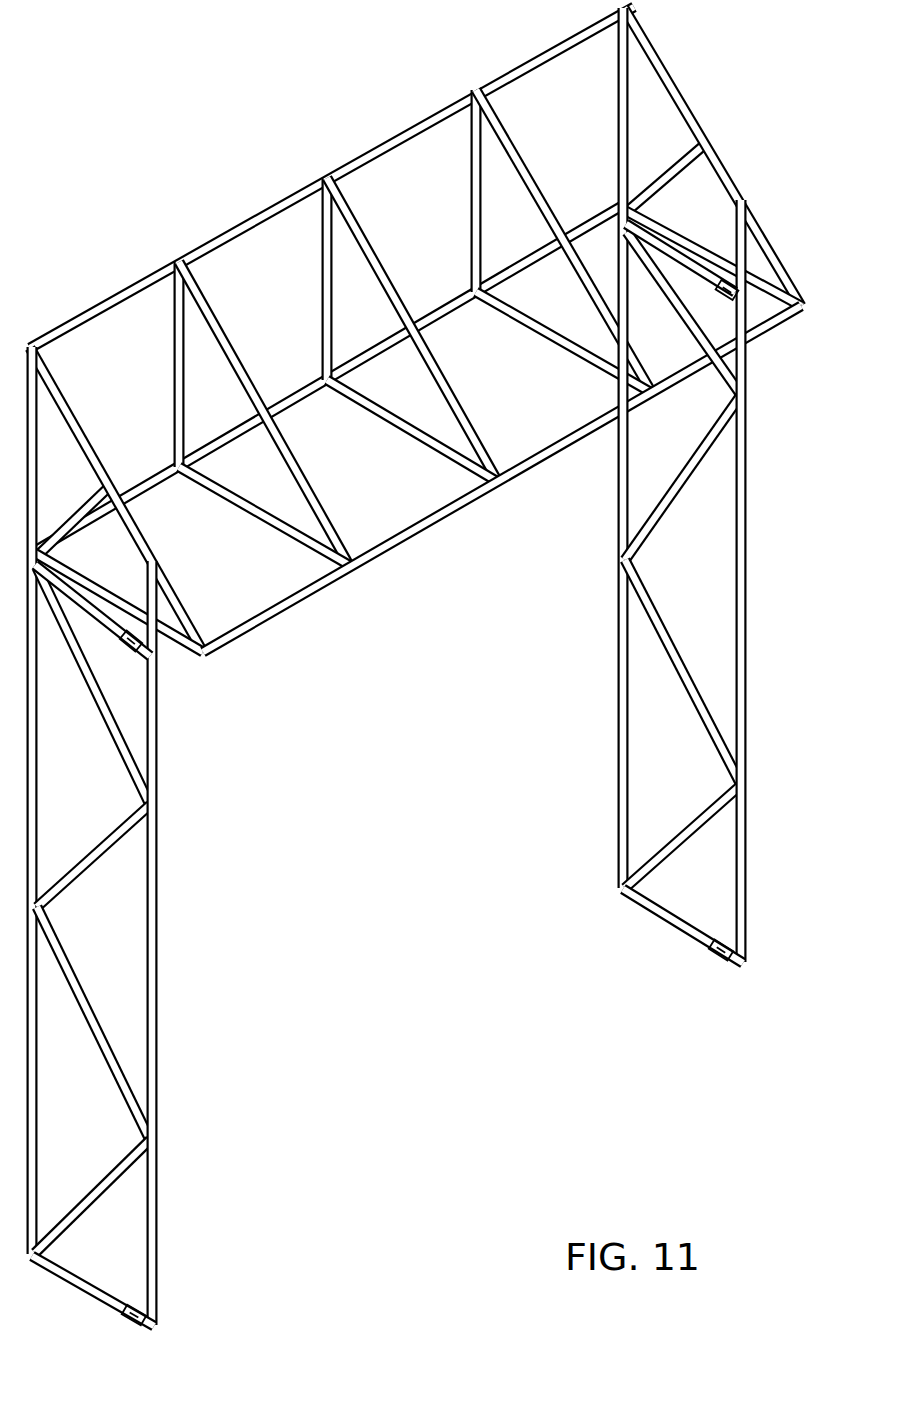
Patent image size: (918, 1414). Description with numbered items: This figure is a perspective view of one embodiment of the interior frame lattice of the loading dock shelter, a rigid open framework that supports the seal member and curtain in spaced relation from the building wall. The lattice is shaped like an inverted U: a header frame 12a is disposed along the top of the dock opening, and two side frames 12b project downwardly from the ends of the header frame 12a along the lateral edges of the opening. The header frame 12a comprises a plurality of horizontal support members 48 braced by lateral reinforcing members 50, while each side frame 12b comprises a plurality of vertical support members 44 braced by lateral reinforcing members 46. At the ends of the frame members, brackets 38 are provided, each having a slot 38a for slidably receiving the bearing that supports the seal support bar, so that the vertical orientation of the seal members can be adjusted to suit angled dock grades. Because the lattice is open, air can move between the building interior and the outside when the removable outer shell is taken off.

The header frame 12a is at (415, 329).
The side frame 12b is at (425, 666).
The bracket 38 is at (118, 627).
The slot 38a is at (126, 642).
The vertical support member 44 is at (40, 1126).
The lateral reinforcing member 46 is at (98, 852).
The horizontal support member 48 is at (259, 207).
The lateral reinforcing member 50 is at (352, 222).